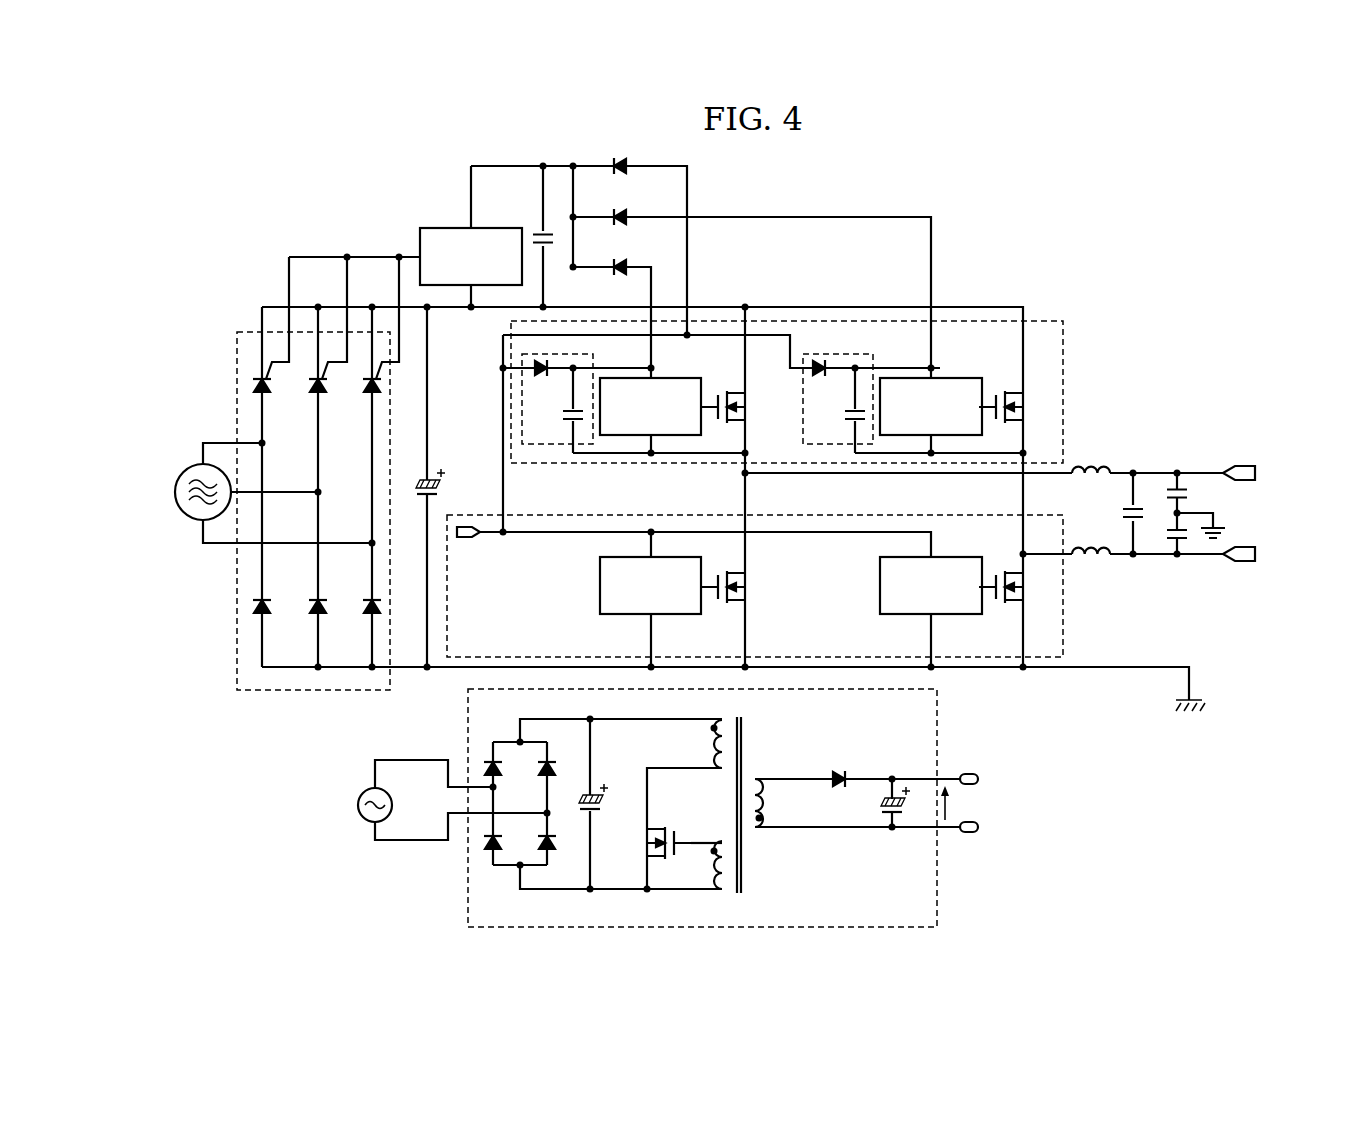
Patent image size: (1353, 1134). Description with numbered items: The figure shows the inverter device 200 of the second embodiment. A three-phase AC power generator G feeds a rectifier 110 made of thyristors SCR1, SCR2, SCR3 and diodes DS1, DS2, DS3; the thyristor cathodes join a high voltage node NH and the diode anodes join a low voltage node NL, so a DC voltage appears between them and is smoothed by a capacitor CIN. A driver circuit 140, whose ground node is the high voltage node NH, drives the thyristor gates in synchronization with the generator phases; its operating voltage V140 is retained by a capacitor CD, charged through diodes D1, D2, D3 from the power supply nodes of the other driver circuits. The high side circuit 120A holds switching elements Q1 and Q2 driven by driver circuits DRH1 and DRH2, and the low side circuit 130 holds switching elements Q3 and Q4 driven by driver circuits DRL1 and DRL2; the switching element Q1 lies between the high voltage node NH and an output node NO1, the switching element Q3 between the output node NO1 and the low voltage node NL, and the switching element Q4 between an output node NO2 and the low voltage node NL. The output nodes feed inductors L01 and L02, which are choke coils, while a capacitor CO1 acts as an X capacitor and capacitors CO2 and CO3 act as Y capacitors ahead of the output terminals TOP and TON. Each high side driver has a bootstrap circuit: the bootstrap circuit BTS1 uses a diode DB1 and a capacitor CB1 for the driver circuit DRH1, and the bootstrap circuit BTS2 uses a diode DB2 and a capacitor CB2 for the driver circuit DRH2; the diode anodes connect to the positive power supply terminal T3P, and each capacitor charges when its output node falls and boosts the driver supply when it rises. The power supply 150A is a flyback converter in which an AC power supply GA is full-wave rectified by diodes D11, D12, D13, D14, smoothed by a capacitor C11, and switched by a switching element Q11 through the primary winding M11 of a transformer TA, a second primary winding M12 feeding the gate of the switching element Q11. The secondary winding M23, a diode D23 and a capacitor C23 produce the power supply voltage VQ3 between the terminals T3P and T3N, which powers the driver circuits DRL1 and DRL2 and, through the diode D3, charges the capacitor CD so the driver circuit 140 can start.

The inverter device 200 is at (1146, 194).
The rectifier 110 is at (237, 334).
The high side circuit 120A is at (1063, 320).
The low side circuit 130 is at (1063, 632).
The driver circuit 140 is at (420, 228).
The power supply 150A is at (468, 899).
The driver supply voltage V140 is at (462, 200).
The capacitor CD is at (538, 233).
The high voltage node NH is at (313, 303).
The thyristor SCR1 is at (257, 388).
The thyristor SCR2 is at (316, 389).
The thyristor SCR3 is at (370, 389).
The three-phase AC power generator G is at (185, 470).
The diode DS1 is at (258, 598).
The diode DS2 is at (315, 598).
The diode DS3 is at (370, 598).
The low voltage node NL is at (318, 680).
The capacitor CIN is at (440, 486).
The positive power supply terminal T3P is at (463, 540).
The negative power supply terminal T3N is at (980, 827).
The diode D1 is at (632, 268).
The diode D2 is at (632, 219).
The diode D3 is at (632, 168).
The bootstrap circuit BTS1 is at (585, 354).
The bootstrap circuit BTS2 is at (866, 354).
The diode DB1 is at (547, 372).
The diode DB2 is at (830, 366).
The capacitor CB1 is at (567, 416).
The capacitor CB2 is at (850, 416).
The driver circuit DRH1 is at (688, 378).
The driver circuit DRH2 is at (968, 378).
The driver circuit DRL1 is at (620, 557).
The driver circuit DRL2 is at (962, 558).
The switching element Q1 is at (732, 406).
The switching element Q2 is at (1012, 405).
The switching element Q3 is at (746, 586).
The switching element Q4 is at (1030, 587).
The output node NO1 is at (744, 473).
The output node NO2 is at (1020, 486).
The inductor L01 is at (1100, 466).
The inductor L02 is at (1097, 560).
The capacitor CO1 is at (1124, 508).
The capacitor CO2 is at (1190, 494).
The capacitor CO3 is at (1191, 533).
The output terminal TOP is at (1243, 466).
The output terminal TON is at (1243, 562).
The AC power supply GA is at (358, 800).
The diode D11 is at (500, 758).
The diode D12 is at (552, 766).
The diode D13 is at (492, 850).
The diode D14 is at (552, 850).
The capacitor C11 is at (597, 812).
The primary winding M11 is at (712, 740).
The primary winding M12 is at (712, 866).
The switching element Q11 is at (678, 838).
The transformer TA is at (750, 847).
The secondary winding M23 is at (760, 806).
The diode D23 is at (833, 775).
The capacitor C23 is at (886, 804).
The power supply voltage VQ3 is at (969, 803).